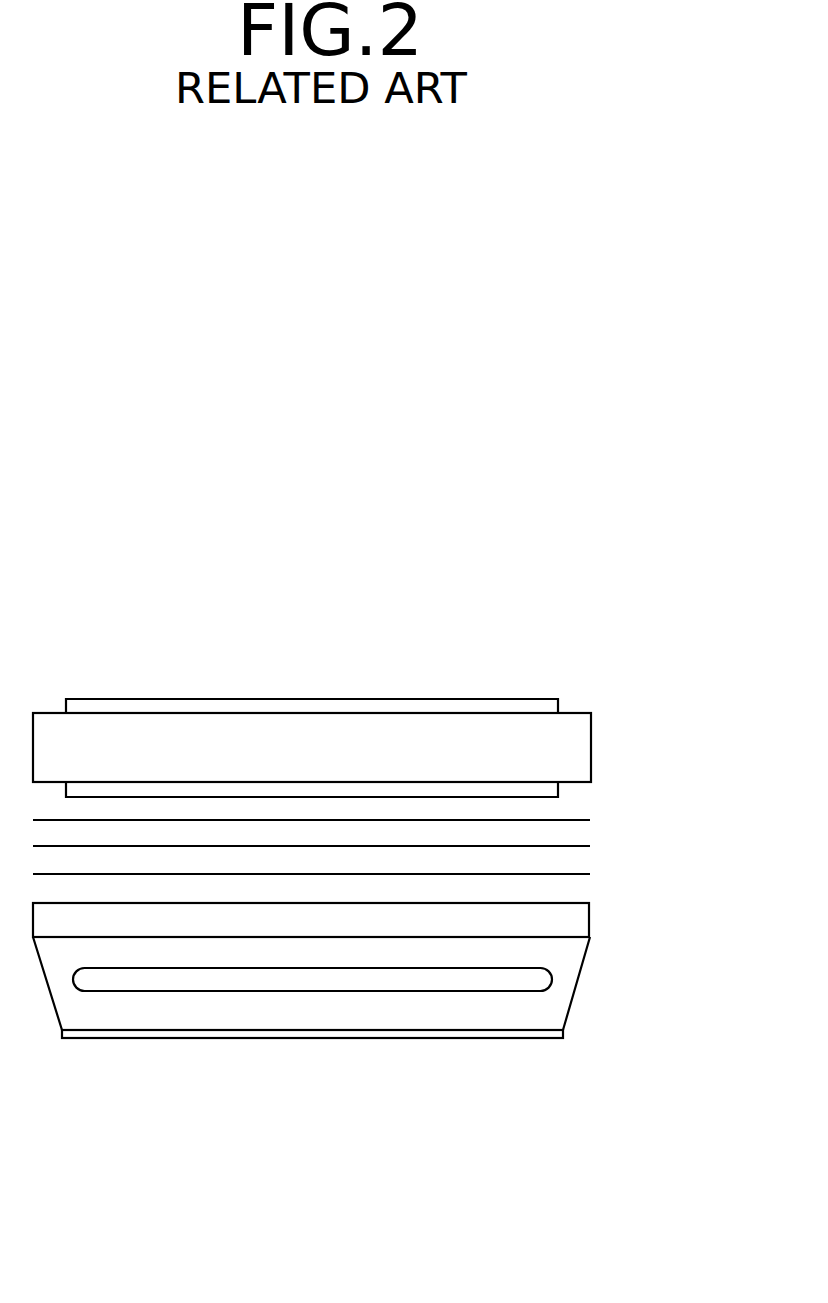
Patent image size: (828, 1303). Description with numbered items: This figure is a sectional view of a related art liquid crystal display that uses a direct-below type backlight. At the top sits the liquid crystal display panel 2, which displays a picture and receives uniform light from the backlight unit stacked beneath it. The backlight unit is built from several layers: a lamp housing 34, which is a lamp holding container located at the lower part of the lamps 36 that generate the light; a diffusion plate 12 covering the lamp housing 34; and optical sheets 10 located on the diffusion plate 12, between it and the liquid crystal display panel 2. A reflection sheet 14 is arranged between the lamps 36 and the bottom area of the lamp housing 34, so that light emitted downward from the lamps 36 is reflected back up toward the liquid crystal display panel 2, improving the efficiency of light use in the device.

The liquid crystal display panel 2 is at (574, 748).
The optical sheets 10 is at (608, 815).
The diffusion plate 12 is at (575, 919).
The reflection sheet 14 is at (199, 1031).
The lamp housing 34 is at (578, 992).
The lamps 36 is at (473, 983).